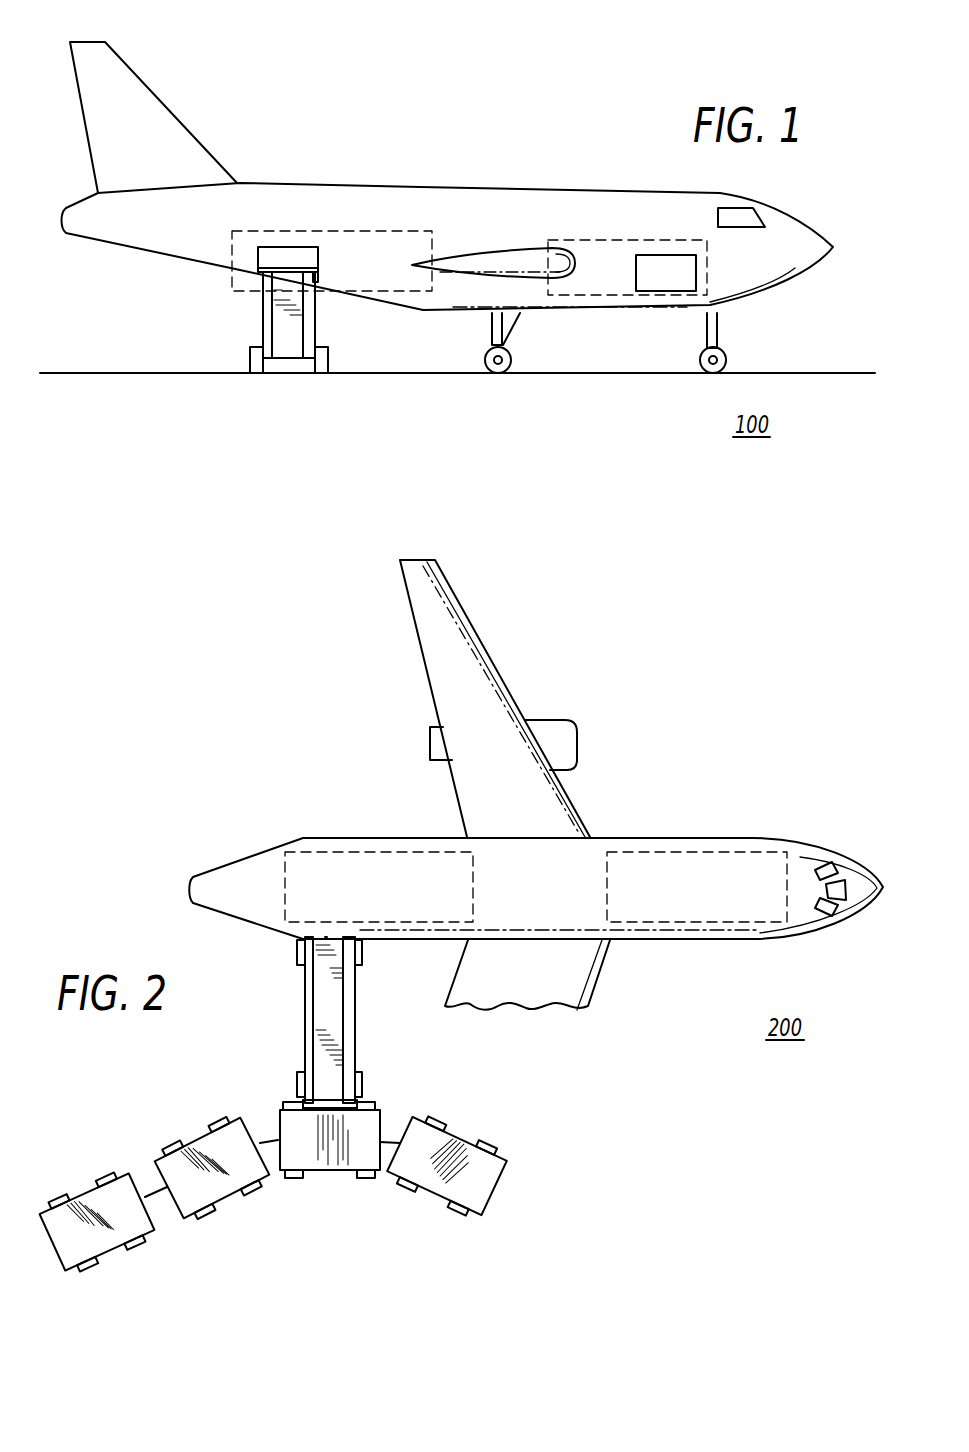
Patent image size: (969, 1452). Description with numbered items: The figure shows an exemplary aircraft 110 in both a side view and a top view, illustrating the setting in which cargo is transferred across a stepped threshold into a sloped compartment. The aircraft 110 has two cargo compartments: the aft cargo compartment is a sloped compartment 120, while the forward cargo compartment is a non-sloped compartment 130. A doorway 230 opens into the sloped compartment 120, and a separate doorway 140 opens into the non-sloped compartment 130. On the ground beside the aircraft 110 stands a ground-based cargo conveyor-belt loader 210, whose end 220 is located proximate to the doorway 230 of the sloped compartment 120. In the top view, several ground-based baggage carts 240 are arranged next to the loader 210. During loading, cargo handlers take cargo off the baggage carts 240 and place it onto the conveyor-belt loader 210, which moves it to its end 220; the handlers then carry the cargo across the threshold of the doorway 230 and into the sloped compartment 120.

In FIG. 1, the aircraft 110 is at (455, 140).
In FIG. 2, the aircraft 110 is at (638, 786).
In FIG. 1, the sloped compartment 120 is at (348, 248).
In FIG. 2, the sloped compartment 120 is at (348, 867).
In FIG. 1, the non-sloped compartment 130 is at (610, 240).
In FIG. 2, the non-sloped compartment 130 is at (702, 870).
In FIG. 1, the doorway 140 is at (696, 273).
In FIG. 1, the ground-based cargo conveyor-belt loader 210 is at (288, 316).
In FIG. 2, the ground-based cargo conveyor-belt loader 210 is at (323, 1015).
In FIG. 1, the end of the ground-based cargo conveyor-belt loader 220 is at (287, 273).
In FIG. 2, the end of the ground-based cargo conveyor-belt loader 220 is at (333, 943).
In FIG. 1, the doorway 230 is at (256, 256).
In FIG. 2, the doorway 230 is at (327, 940).
In FIG. 2, the ground-based baggage carts 240 is at (481, 1227).